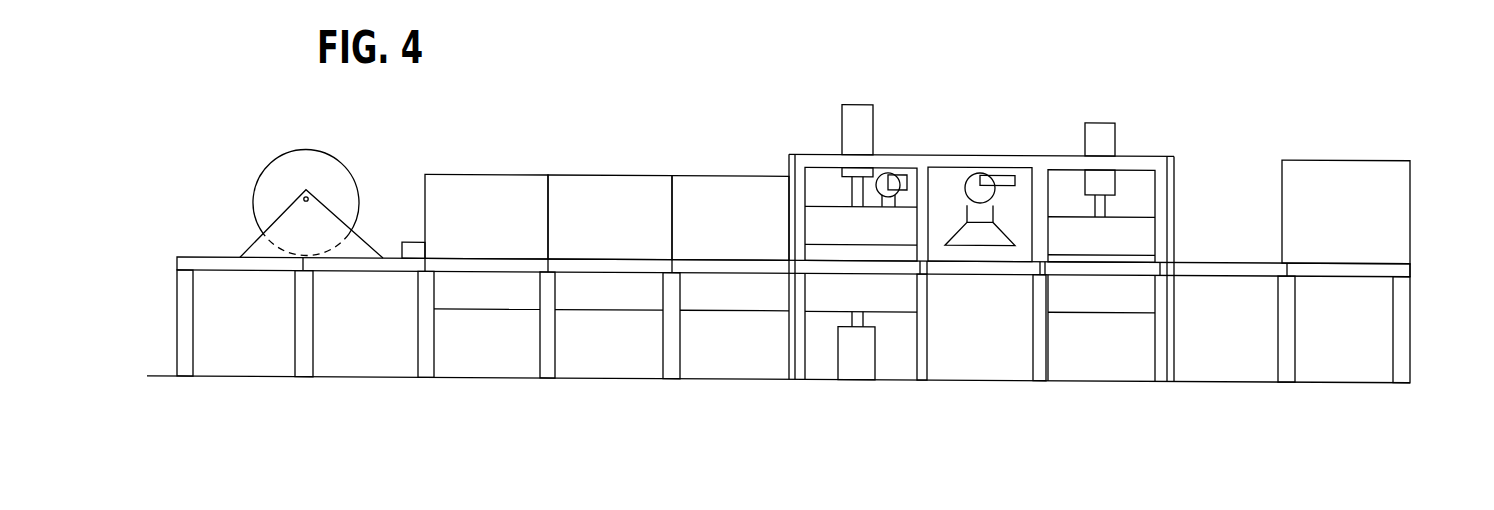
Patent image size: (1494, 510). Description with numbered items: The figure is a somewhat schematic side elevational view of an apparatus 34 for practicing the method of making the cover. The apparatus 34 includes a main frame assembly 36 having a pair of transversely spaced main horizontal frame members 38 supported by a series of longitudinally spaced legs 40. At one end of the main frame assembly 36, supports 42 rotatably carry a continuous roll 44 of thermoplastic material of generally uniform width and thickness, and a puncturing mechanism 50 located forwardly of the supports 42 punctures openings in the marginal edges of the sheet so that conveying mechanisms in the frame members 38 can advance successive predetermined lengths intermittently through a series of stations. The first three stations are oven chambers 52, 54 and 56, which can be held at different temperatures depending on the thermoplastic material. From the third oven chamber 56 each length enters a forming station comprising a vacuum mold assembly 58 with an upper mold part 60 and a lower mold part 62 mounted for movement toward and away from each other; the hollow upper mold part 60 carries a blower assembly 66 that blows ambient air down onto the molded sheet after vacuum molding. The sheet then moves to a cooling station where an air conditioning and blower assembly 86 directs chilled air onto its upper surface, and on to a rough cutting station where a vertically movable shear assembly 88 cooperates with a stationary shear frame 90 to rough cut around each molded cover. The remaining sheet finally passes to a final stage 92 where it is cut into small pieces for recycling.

The apparatus 34 is at (208, 226).
The main frame assembly 36 is at (1412, 257).
The main horizontal frame members 38 is at (338, 263).
The legs 40 is at (302, 326).
The supports 42 is at (255, 244).
The continuous roll 44 is at (332, 150).
The puncturing mechanism 50 is at (397, 238).
The first oven chamber 52 is at (500, 187).
The second oven chamber 54 is at (630, 186).
The third oven chamber 56 is at (742, 181).
The vacuum mold assembly 58 is at (793, 231).
The upper mold part 60 is at (823, 218).
The lower mold part 62 is at (820, 288).
The blower assembly 66 is at (887, 180).
The air conditioning and blower assembly 86 is at (985, 168).
The vertically movable shear assembly 88 is at (1147, 224).
The stationary shear frame 90 is at (1140, 281).
The final stage 92 is at (1363, 164).